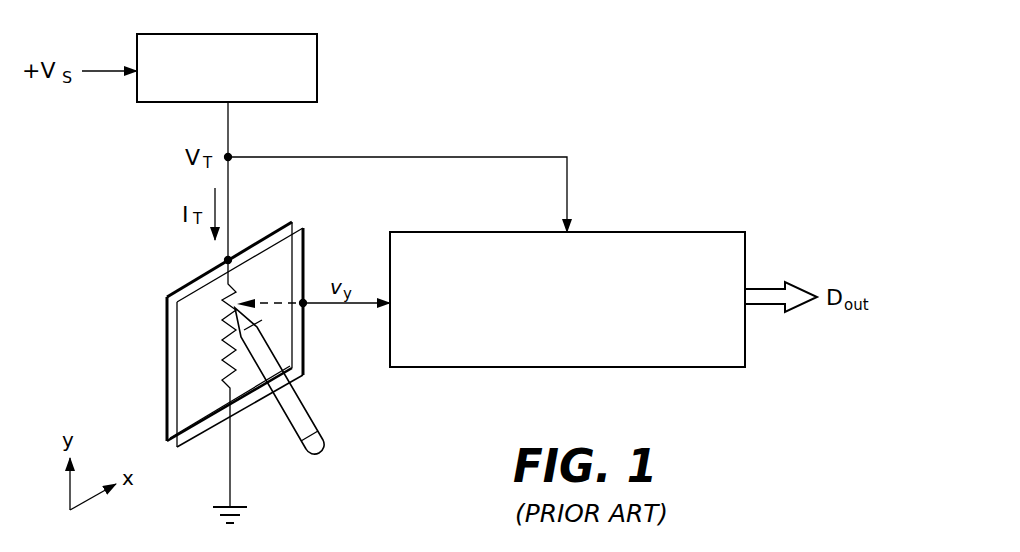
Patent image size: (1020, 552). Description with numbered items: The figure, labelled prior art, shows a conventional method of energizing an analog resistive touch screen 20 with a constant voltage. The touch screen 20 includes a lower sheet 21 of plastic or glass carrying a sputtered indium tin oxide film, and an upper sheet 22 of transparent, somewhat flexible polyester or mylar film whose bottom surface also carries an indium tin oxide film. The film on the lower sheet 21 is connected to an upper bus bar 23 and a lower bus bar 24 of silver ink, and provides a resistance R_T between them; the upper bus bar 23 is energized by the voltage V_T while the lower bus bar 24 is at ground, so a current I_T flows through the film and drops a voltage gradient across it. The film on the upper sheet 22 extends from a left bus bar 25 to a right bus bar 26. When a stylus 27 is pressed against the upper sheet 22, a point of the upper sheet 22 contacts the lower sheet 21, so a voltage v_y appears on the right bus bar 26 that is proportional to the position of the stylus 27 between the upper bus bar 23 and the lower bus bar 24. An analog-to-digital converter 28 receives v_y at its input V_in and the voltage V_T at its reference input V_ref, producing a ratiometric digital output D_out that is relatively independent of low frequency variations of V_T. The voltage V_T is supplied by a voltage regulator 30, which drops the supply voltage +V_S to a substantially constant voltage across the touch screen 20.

The analog resistive touch screen 20 is at (148, 310).
The lower sheet 21 is at (170, 350).
The upper sheet 22 is at (185, 389).
The upper bus bar 23 is at (197, 277).
The lower bus bar 24 is at (190, 432).
The left bus bar 25 is at (178, 421).
The right bus bar 26 is at (305, 340).
The stylus 27 is at (312, 417).
The analog-to-digital converter 28 is at (678, 232).
The voltage regulator 30 is at (242, 34).